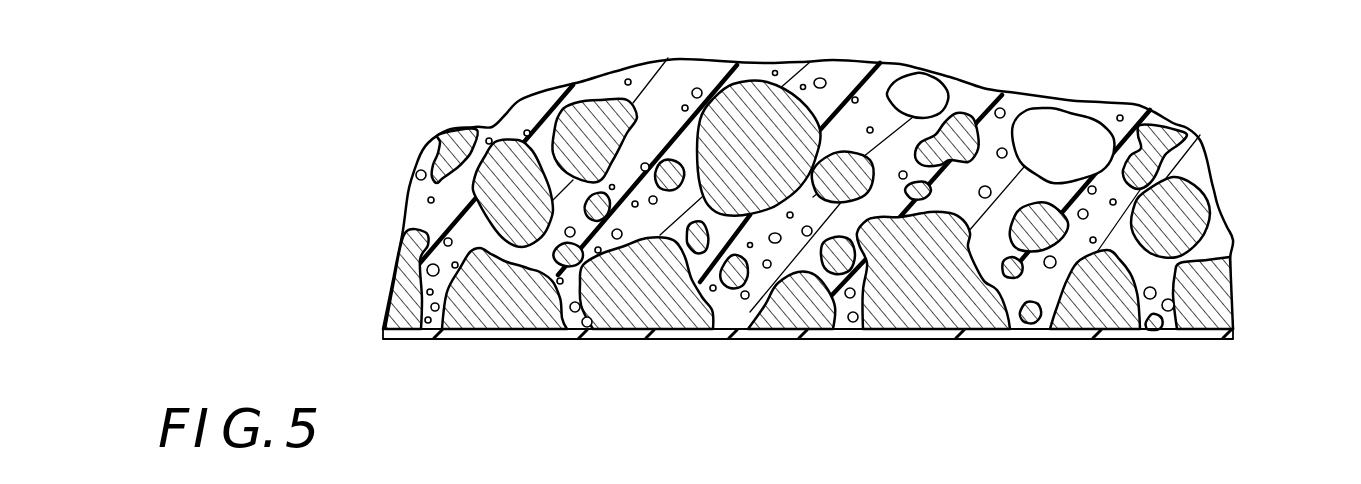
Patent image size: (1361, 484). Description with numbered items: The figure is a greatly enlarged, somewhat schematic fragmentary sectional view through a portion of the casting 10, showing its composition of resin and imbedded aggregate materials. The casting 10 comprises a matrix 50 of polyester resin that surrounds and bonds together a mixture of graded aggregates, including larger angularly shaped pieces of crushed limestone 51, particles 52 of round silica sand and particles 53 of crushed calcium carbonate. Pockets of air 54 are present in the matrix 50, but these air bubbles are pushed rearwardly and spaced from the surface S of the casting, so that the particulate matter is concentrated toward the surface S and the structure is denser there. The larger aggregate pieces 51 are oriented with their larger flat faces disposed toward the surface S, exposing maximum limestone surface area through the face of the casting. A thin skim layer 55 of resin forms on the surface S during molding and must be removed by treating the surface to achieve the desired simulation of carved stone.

The casting 10 is at (641, 380).
The matrix 50 is at (853, 82).
The pieces of crushed limestone 51 is at (612, 116).
The particles of round silica sand 52 is at (506, 168).
The particles of crushed calcium carbonate 53 is at (702, 224).
The pockets of air 54 is at (930, 72).
The skim layer 55 is at (1146, 340).
The surface S is at (1030, 340).